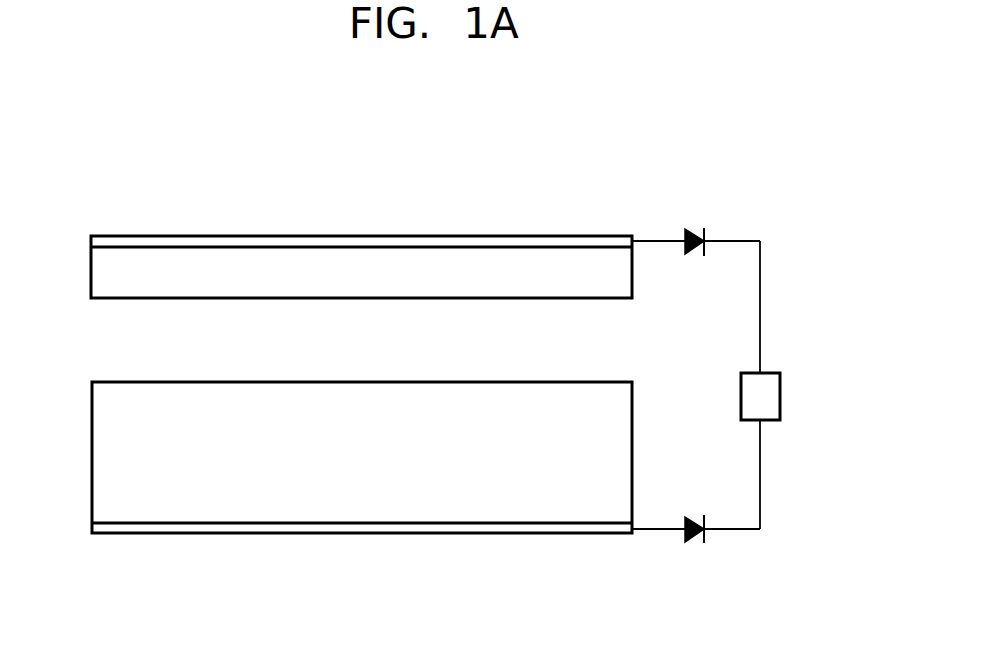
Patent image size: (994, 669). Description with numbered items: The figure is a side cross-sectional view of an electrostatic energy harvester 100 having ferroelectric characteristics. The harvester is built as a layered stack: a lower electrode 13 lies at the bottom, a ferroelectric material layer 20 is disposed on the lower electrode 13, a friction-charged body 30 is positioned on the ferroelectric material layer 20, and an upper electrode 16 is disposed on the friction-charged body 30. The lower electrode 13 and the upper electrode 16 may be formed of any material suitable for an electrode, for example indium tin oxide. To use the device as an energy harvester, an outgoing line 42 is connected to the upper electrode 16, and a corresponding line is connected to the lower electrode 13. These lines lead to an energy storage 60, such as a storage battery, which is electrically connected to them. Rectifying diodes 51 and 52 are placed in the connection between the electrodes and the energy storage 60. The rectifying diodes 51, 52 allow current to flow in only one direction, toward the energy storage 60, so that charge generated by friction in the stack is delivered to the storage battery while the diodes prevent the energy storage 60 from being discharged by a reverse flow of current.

The electrostatic energy harvester 100 is at (580, 142).
The friction-charged body 30 is at (105, 276).
The upper electrode 16 is at (145, 243).
The ferroelectric material layer 20 is at (104, 459).
The lower electrode 13 is at (261, 525).
The outgoing line 42 is at (660, 241).
The rectifying diode 52 is at (699, 232).
The rectifying diode 51 is at (698, 536).
The energy storage 60 is at (768, 393).